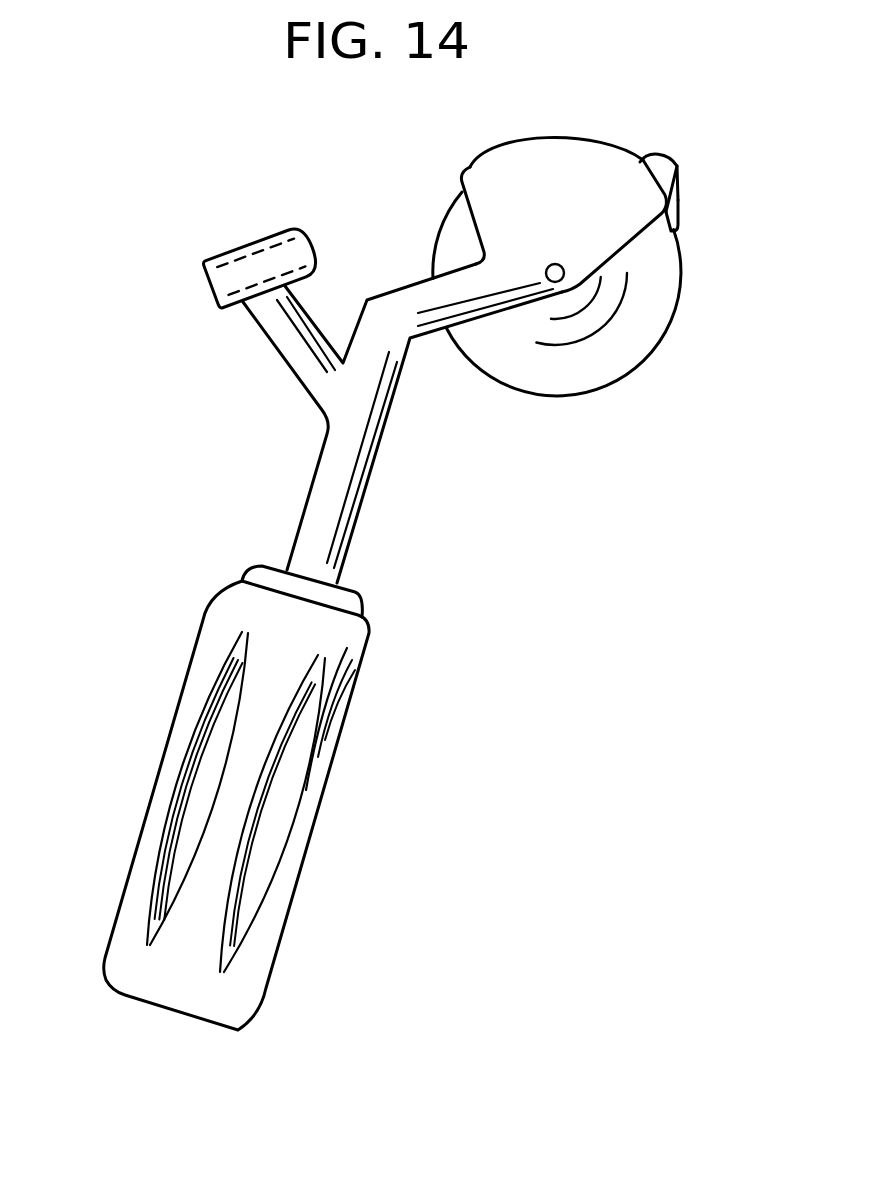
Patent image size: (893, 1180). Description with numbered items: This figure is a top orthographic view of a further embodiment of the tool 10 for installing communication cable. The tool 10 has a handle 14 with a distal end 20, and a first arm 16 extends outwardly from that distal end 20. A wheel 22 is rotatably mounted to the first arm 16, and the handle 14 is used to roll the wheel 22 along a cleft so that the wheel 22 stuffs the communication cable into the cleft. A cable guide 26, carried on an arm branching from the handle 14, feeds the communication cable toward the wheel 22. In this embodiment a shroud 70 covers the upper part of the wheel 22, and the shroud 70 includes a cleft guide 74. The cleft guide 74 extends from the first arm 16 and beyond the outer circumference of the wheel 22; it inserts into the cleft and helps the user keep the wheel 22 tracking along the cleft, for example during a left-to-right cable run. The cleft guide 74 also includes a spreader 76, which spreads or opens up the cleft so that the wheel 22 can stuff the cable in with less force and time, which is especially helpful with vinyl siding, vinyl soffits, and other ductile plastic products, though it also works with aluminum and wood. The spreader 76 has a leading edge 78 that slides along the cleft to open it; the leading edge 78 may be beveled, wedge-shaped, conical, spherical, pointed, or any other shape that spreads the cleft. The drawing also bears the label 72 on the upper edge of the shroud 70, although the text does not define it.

The tool 10 is at (114, 249).
The handle 14 is at (293, 542).
The first arm 16 is at (410, 288).
The distal end 20 is at (410, 343).
The wheel 22 is at (592, 392).
The cable guide 26 is at (253, 240).
The shroud 70 is at (492, 180).
The guard upper edge 72 is at (556, 121).
The cleft guide 74 is at (660, 157).
The spreader 76 is at (682, 215).
The leading edge 78 is at (682, 168).